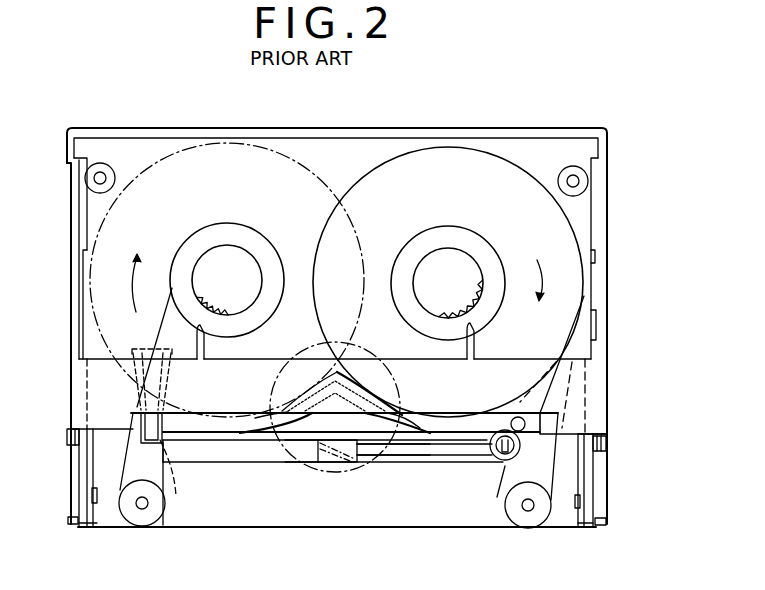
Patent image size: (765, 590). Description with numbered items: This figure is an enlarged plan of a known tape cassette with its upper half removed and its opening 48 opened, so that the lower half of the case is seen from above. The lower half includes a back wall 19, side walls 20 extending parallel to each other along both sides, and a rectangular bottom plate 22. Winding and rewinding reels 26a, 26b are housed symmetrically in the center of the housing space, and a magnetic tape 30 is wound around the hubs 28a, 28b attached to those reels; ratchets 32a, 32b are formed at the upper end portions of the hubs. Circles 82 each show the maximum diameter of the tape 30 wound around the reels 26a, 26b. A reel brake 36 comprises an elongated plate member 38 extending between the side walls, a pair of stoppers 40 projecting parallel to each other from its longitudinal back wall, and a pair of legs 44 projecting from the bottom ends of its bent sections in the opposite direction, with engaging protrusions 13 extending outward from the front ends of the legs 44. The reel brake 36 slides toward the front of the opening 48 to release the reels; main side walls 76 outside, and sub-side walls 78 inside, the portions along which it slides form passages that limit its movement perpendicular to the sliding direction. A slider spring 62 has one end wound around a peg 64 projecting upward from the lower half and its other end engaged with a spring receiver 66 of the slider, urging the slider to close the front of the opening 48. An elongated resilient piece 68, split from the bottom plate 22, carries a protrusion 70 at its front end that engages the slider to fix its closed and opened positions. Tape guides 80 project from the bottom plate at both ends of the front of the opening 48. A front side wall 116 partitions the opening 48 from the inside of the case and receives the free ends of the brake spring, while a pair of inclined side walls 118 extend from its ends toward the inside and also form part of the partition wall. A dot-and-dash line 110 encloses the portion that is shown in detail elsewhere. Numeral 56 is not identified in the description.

The side wall 20 is at (82, 213).
The back wall 19 is at (307, 128).
The bottom plate 22 is at (125, 128).
The circle 82 is at (209, 128).
The side wall 56 is at (72, 294).
The leg 44 is at (78, 475).
The main side wall 76 is at (67, 438).
The engaging protrusion 13 is at (67, 520).
The stopper 40 is at (212, 345).
The hub 28a is at (268, 245).
The hub 28b is at (490, 244).
The ratchet 32a is at (192, 301).
The ratchet 32b is at (432, 304).
The winding reel 26a is at (187, 219).
The rewinding reel 26b is at (436, 219).
The reel brake 36 is at (570, 392).
The resilient piece 68 is at (163, 378).
The plate member 38 is at (250, 405).
The dot-and-dash line 110 is at (408, 396).
The opening 48 is at (385, 513).
The spring receiver 66 is at (333, 452).
The inclined side wall 118 is at (290, 448).
The slider spring 62 is at (452, 445).
The peg 64 is at (503, 468).
The front side wall 116 is at (197, 445).
The magnetic tape 30 is at (128, 464).
The protrusion 70 is at (147, 512).
The tape guide 80 is at (150, 513).
The sub-side wall 78 is at (93, 527).